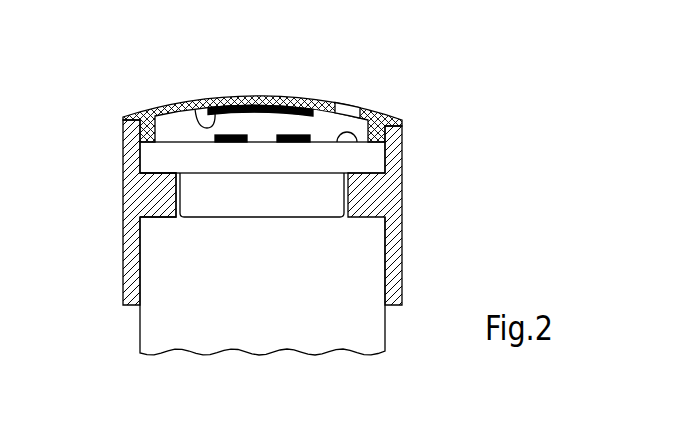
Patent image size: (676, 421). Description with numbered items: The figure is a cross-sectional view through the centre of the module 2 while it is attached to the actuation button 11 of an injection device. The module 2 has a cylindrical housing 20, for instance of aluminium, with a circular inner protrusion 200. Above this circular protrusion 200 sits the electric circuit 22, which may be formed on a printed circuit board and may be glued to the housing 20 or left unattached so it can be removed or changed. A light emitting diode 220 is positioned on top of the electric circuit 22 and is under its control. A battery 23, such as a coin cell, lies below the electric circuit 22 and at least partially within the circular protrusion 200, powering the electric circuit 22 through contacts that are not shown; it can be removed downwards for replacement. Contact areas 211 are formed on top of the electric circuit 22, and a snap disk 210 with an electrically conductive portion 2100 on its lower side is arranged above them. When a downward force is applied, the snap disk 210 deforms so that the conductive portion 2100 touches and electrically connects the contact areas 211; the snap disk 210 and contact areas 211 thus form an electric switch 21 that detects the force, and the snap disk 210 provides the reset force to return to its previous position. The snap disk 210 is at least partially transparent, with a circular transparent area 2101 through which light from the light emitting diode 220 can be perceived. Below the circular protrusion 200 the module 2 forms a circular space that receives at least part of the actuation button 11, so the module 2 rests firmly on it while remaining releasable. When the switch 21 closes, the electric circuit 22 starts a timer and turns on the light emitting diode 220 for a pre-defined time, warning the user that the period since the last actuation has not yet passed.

The module 2 is at (262, 182).
The actuation button 11 is at (162, 320).
The housing 20 is at (223, 212).
The circular inner protrusion 200 is at (160, 203).
The electric switch 21 is at (244, 93).
The snap disk 210 is at (245, 98).
The electrically conductive portion 2100 is at (185, 100).
The circular transparent area 2101 is at (348, 100).
The electric circuit 22 is at (310, 205).
The contact areas 211 is at (293, 143).
The light emitting diode 220 is at (352, 147).
The battery 23 is at (310, 200).